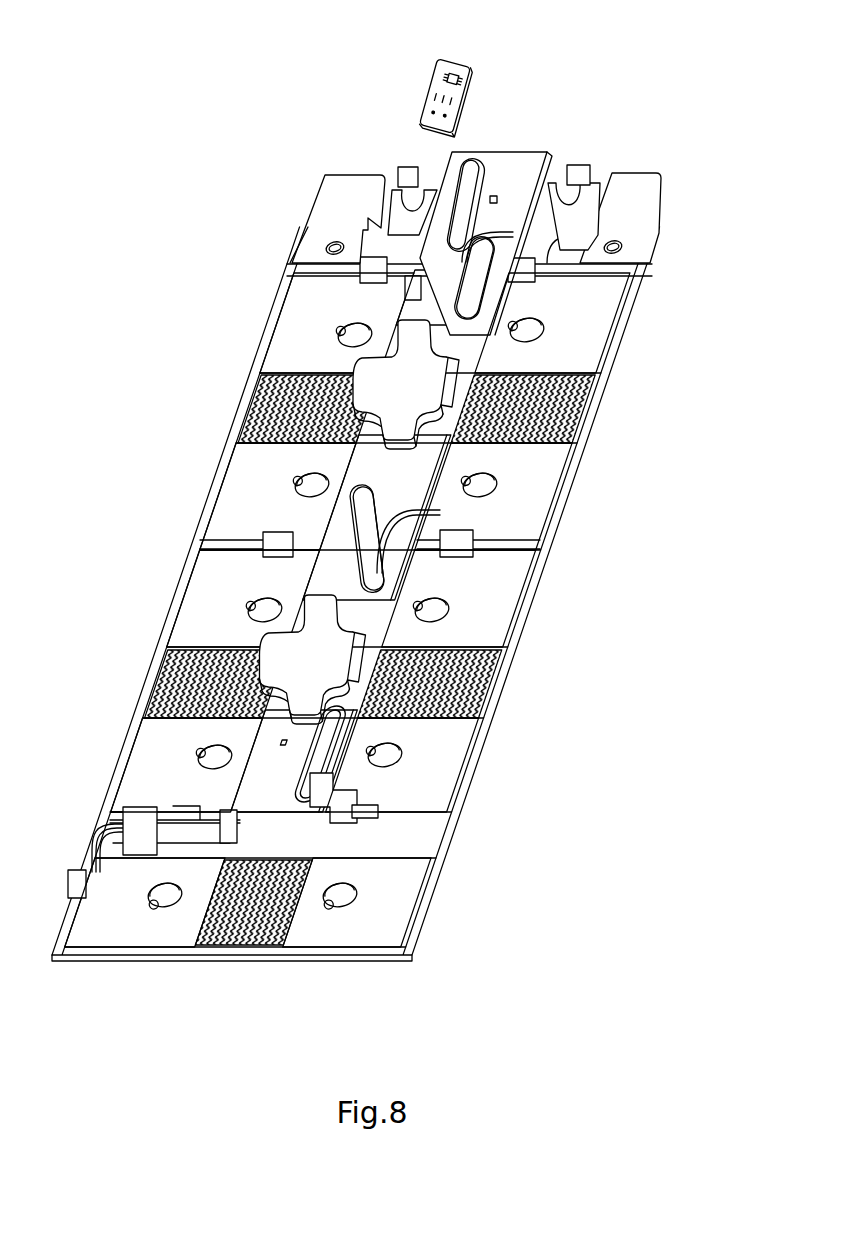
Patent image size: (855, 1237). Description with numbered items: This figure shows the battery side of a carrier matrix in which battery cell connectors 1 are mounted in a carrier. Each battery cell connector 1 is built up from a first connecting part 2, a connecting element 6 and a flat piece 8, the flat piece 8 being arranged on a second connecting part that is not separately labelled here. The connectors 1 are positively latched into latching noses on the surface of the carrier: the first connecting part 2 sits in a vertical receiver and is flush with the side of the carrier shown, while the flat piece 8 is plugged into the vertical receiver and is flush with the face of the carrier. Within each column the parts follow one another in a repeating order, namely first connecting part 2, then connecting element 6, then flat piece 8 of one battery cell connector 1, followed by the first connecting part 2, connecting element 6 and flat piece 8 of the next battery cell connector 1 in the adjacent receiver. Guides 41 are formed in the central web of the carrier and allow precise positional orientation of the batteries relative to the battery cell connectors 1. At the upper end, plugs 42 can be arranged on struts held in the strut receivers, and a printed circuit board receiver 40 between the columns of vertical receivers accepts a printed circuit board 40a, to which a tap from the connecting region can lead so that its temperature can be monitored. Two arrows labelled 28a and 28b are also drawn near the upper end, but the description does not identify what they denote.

The battery cell connector 1 is at (427, 787).
The first connecting part 2 is at (147, 933).
The connecting element 6 is at (257, 937).
The flat piece 8 is at (337, 933).
The first end region 28a is at (386, 117).
The second end region 28b is at (610, 117).
The printed circuit board receiver 40 is at (397, 230).
The printed circuit board 40a is at (455, 65).
The guides 41 is at (312, 618).
The plugs 42 is at (638, 188).